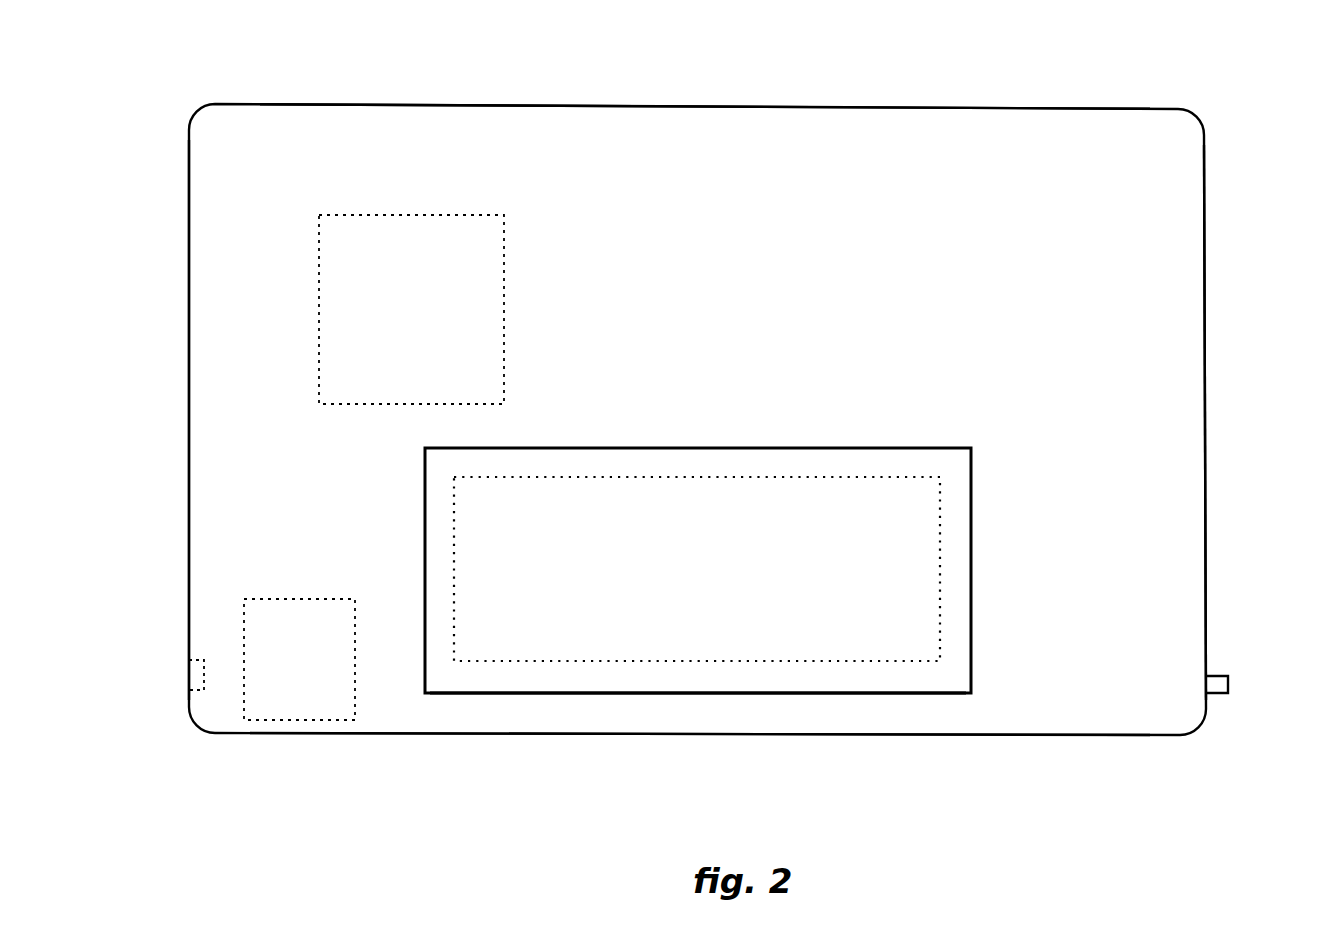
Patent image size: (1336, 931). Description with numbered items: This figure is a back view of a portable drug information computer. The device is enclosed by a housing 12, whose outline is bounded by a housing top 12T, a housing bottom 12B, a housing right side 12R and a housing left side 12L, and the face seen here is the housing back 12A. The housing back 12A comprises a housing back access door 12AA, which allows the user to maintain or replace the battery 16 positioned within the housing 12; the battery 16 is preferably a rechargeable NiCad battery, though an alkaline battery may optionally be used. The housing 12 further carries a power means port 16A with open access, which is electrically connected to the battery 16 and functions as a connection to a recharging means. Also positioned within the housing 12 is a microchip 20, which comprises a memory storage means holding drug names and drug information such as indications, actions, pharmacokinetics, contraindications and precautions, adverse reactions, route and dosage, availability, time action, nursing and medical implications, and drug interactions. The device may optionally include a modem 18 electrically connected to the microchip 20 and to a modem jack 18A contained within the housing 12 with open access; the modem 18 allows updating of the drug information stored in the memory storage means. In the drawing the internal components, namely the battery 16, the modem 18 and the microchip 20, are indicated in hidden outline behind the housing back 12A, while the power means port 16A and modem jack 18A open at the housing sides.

The housing 12 is at (1070, 110).
The housing top 12T is at (749, 107).
The housing bottom 12B is at (582, 735).
The housing right side 12R is at (189, 209).
The housing left side 12L is at (1204, 198).
The housing back 12A is at (1135, 352).
The housing back access door 12AA is at (743, 693).
The battery 16 is at (902, 661).
The power means port 16A is at (1218, 684).
The modem 18 is at (300, 692).
The modem jack 18A is at (197, 677).
The microchip 20 is at (399, 316).